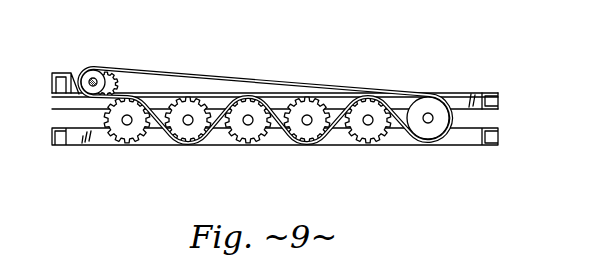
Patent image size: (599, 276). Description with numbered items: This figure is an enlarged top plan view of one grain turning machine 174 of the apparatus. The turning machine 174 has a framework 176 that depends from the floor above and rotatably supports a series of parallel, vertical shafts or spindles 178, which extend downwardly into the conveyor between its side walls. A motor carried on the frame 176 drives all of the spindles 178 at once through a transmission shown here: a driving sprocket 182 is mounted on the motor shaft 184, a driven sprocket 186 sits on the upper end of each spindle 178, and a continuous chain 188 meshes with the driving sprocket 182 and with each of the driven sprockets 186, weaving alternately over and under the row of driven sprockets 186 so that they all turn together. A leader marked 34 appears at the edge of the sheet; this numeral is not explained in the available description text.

The turning machine 174 is at (222, 51).
The framework 176 is at (453, 97).
The spindle 178 is at (426, 120).
The driving sprocket 182 is at (117, 78).
The motor shaft 184 is at (91, 77).
The driven sprocket 186 is at (122, 144).
The continuous chain 188 is at (258, 81).
The leader to adjacent figure 34 is at (543, 1).